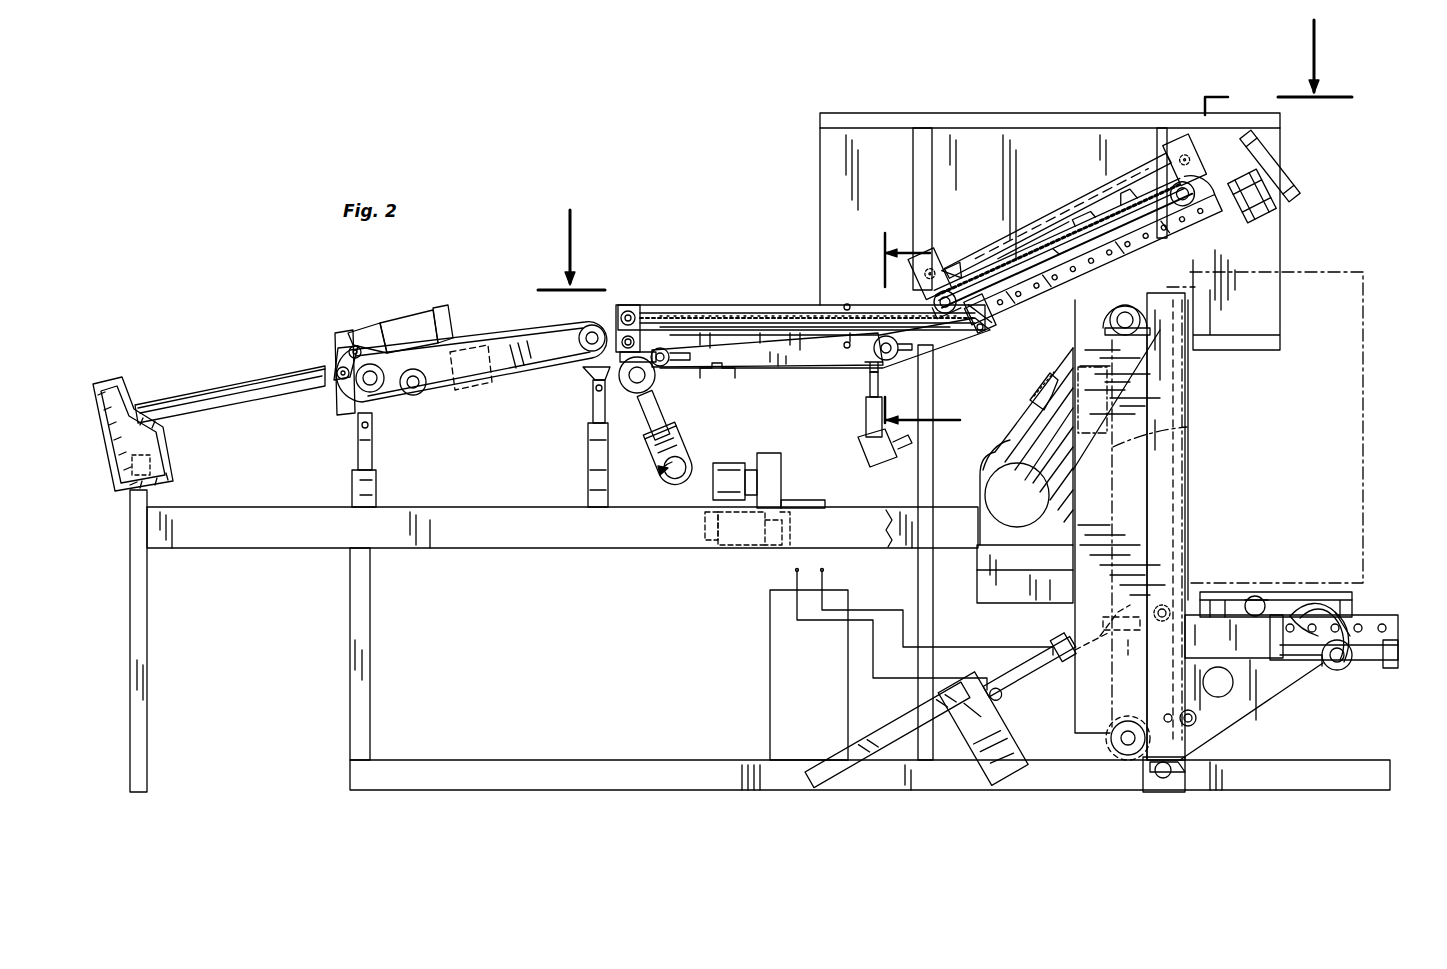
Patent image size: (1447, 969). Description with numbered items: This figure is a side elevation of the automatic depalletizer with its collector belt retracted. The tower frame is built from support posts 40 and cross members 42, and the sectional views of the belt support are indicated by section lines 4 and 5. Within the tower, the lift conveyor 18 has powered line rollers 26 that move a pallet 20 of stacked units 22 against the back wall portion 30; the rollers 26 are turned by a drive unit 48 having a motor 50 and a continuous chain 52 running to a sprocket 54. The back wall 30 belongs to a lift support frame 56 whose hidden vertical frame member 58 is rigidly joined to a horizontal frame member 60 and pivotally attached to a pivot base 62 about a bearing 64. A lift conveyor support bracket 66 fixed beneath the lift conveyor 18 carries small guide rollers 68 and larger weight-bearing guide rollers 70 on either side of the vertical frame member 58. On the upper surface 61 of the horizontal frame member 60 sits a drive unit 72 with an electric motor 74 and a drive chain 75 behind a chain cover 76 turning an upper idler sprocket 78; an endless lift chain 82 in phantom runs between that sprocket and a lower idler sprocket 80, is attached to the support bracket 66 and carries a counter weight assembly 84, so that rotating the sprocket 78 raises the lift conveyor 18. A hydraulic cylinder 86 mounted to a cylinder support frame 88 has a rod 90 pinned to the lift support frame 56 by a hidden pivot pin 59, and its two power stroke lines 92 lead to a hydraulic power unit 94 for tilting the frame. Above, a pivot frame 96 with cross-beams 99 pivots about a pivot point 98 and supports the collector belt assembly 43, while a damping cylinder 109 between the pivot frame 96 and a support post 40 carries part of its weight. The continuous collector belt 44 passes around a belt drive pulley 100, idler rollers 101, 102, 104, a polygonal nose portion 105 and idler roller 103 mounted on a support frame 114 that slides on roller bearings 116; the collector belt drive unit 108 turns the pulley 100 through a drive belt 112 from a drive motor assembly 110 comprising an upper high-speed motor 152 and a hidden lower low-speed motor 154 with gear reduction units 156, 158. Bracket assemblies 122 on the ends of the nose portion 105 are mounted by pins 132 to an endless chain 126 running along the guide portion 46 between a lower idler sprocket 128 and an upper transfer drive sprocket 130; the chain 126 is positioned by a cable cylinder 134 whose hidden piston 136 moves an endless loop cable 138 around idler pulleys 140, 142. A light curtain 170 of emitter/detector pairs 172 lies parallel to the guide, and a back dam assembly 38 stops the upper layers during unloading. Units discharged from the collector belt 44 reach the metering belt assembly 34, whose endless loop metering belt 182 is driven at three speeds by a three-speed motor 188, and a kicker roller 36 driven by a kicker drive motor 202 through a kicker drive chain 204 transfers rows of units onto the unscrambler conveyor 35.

The section line 4- 4 is at (950, 339).
The section line 5- 5 is at (957, 148).
The lift conveyor 18 is at (1400, 633).
The pallet 20 is at (1348, 606).
The units 22 is at (1362, 272).
The powered line rollers 26 is at (1346, 630).
The back wall portion 30 is at (1185, 498).
The metering belt assembly 34 is at (453, 319).
The unscrambler conveyor 35 is at (236, 384).
The kicker roller 36 is at (345, 358).
The back dam assembly 38 is at (1292, 218).
The support posts 40 is at (924, 402).
The cross members 42 is at (496, 538).
The collector belt assembly 43 is at (734, 298).
The collector belt 44 is at (770, 360).
The guide portion 46 is at (1060, 205).
The drive unit 48 is at (1365, 688).
The motor 50 is at (1400, 655).
The continuous chain 52 is at (1335, 672).
The sprocket 54 is at (1273, 595).
The lift support frame 56 is at (1068, 611).
The vertical frame member 58 is at (1185, 470).
The pivot pin 59 is at (1130, 655).
The horizontal frame member 60 is at (985, 598).
The upper surface 61 is at (978, 570).
The pivot base 62 is at (1160, 792).
The bearing 64 is at (1190, 762).
The lift conveyor support bracket 66 is at (1278, 708).
The small guide rollers 68 is at (1196, 660).
The large guide rollers 70 is at (1163, 604).
The drive unit 72 is at (1004, 412).
The electric motor 74 is at (997, 462).
The endless drive chain 75 is at (1045, 398).
The chain cover 76 is at (1017, 495).
The upper idler sprocket 78 is at (1152, 290).
The lower idler sprocket 80 is at (1106, 740).
The endless lift chain 82 is at (1187, 427).
The counter weight assembly 84 is at (1173, 380).
The hydraulic cylinders 86 is at (1046, 676).
The cylinder support frame 88 is at (882, 714).
The hydraulic cylinder rod 90 is at (1102, 654).
The power stroke lines 92 is at (882, 628).
The hydraulic power unit 94 is at (802, 694).
The pivot frame 96 is at (652, 305).
The pivot point 98 is at (588, 385).
The cross-beams 99 is at (727, 373).
The belt drive pulley 100 is at (658, 386).
The idler roller 101 is at (672, 365).
The idler roller 102 is at (924, 366).
The idler roller 103 is at (632, 305).
The idler roller 104 is at (737, 308).
The nose portion 105 is at (1040, 300).
The collector belt drive unit 108 is at (710, 462).
The damping cylinder 109 is at (862, 440).
The drive motor assembly 110 is at (790, 464).
The drive belt 112 is at (640, 420).
The support frame 114 is at (760, 325).
The roller bearings 116 is at (847, 304).
The bracket assemblies 122 is at (996, 328).
The endless chain 126 is at (1059, 237).
The lower idler sprocket 128 is at (962, 290).
The upper transfer drive sprocket 130 is at (1205, 185).
The pins 132 is at (958, 300).
The fluid operated cable cylinder 134 is at (1110, 176).
The piston 136 is at (998, 242).
The endless loop cable 138 is at (1084, 192).
The idler pulley 140 is at (918, 262).
The idler pulley 142 is at (1182, 135).
The upper high-speed motor 152 is at (748, 470).
The lower low-speed motor 154 is at (735, 552).
The gear reduction unit 156 is at (700, 550).
The gear reduction unit 158 is at (765, 552).
The light curtain 170 is at (1245, 210).
The light emitter/detector pairs 172 is at (1128, 304).
The endless loop metering belt 182 is at (494, 330).
The three-speed motor 188 is at (452, 400).
The kicker drive motor 202 is at (402, 318).
The kicker drive chain 204 is at (348, 345).